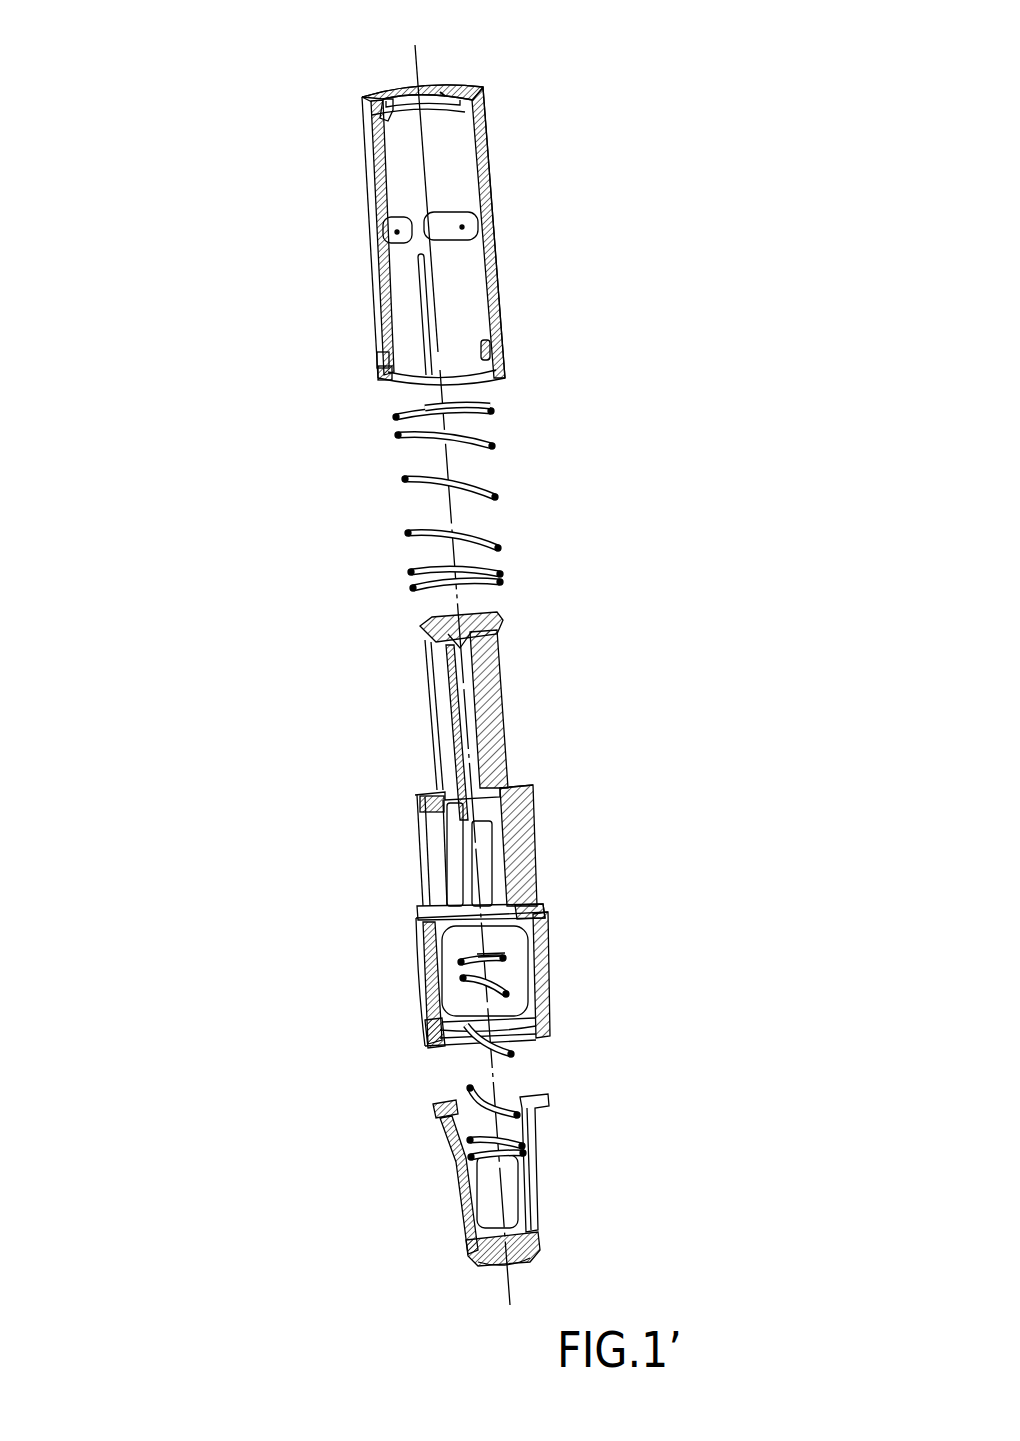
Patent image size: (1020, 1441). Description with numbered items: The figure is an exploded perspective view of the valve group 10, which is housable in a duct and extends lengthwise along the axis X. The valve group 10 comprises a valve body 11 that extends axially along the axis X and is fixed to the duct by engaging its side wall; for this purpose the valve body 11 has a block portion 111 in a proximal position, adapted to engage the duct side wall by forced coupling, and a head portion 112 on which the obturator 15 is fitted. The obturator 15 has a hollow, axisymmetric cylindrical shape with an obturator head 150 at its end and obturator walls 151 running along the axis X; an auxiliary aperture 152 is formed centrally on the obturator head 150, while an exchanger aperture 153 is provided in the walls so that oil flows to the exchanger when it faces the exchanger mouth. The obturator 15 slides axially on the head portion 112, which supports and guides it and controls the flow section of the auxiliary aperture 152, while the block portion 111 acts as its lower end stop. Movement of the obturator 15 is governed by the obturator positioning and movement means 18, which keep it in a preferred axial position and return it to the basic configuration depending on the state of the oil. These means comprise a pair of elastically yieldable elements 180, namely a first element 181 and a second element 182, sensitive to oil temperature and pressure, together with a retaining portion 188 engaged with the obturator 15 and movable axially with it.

The valve group 10 is at (482, 978).
The valve body 11 is at (505, 978).
The obturator 15 is at (394, 192).
The obturator positioning and movement means 18 is at (480, 498).
The block portion 111 is at (417, 1048).
The head portion 112 is at (506, 716).
The obturator head 150 is at (494, 96).
The obturator walls 151 is at (498, 287).
The auxiliary aperture 152 is at (445, 90).
The exchanger aperture 153 is at (376, 232).
The pair of elastically yieldable elements 180 is at (422, 1219).
The first element 181 is at (398, 482).
The second element 182 is at (455, 1090).
The retaining portion 188 is at (475, 1254).
The axis X is at (411, 45).